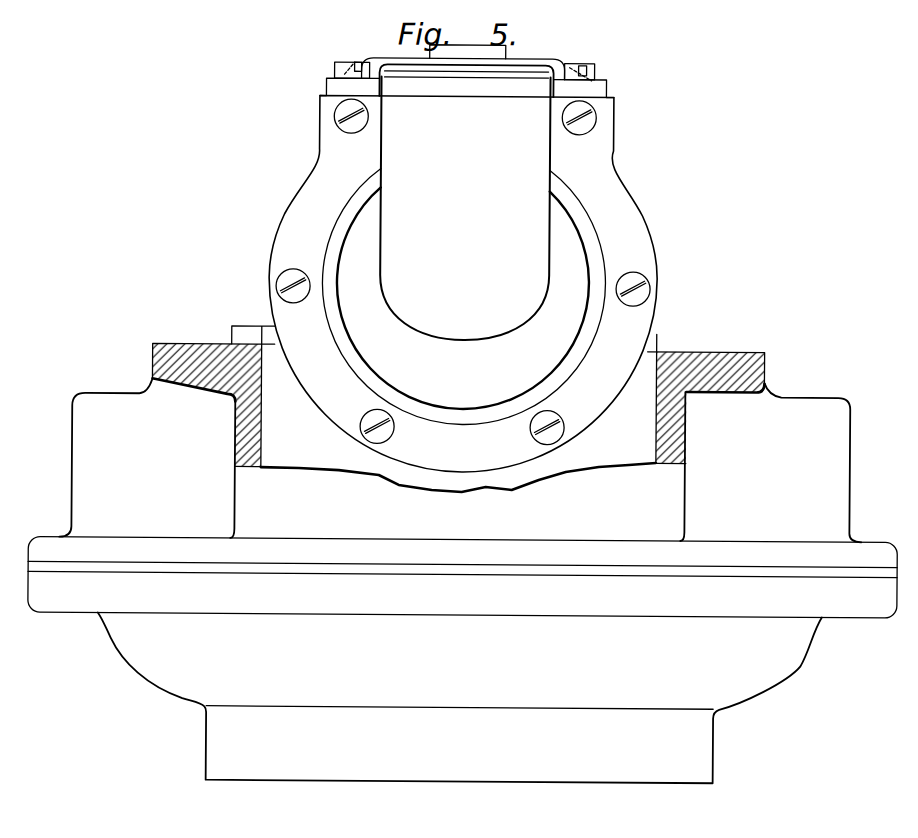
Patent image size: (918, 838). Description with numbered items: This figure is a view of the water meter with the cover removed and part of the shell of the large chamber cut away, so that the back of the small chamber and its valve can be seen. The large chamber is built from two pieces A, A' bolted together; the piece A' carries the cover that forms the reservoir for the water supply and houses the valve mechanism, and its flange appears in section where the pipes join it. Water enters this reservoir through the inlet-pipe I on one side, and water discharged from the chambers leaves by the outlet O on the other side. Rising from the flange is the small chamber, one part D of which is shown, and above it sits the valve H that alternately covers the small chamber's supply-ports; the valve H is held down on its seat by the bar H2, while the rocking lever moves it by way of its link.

The large chamber piece A is at (459, 698).
The large chamber piece A' is at (463, 480).
The small chamber part D is at (465, 208).
The valve H is at (467, 80).
The bar H2 is at (498, 58).
The outlet O is at (147, 458).
The inlet-pipe I is at (771, 463).